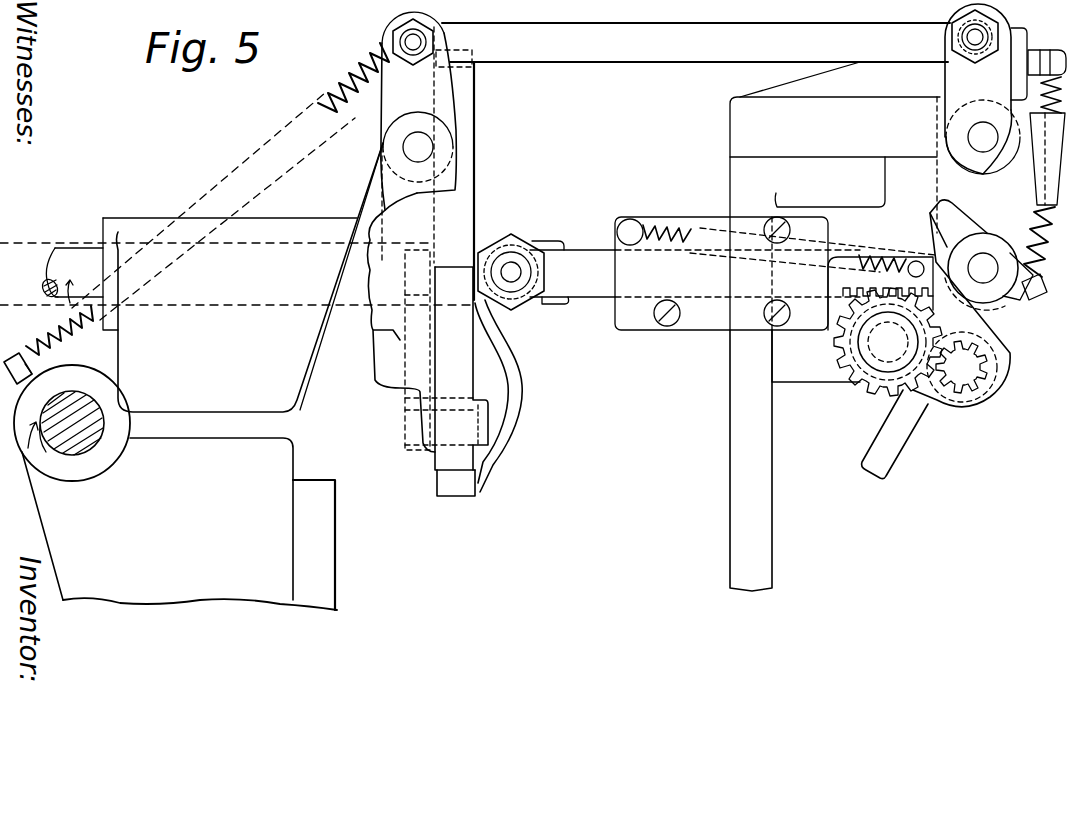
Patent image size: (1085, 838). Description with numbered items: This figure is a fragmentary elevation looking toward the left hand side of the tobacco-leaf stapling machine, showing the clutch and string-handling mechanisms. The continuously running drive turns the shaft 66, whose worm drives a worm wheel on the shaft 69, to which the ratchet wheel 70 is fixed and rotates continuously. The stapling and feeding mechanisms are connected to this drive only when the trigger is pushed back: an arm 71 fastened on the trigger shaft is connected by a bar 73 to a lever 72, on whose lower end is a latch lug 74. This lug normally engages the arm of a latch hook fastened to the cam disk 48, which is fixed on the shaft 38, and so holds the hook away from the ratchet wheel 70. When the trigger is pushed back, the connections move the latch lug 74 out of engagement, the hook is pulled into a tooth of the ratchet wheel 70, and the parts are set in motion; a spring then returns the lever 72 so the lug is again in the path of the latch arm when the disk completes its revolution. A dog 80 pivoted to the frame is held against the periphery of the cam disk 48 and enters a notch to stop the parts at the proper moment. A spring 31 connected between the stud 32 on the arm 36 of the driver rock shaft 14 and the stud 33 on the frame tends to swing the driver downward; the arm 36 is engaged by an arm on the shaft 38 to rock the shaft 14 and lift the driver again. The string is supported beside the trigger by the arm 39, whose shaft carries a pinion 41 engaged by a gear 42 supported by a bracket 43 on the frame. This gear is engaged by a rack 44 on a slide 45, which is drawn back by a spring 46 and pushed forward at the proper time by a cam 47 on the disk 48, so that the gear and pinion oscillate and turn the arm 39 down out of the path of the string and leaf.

The driver rock shaft 14 is at (990, 285).
The spring 31 is at (1044, 177).
The stud 32 is at (1047, 290).
The stud 33 is at (1070, 40).
The arm 36 is at (953, 212).
The shaft 38 is at (552, 240).
The string supporting arm 39 is at (910, 437).
The pinion 41 is at (983, 392).
The gear 42 is at (880, 392).
The bracket 43 is at (1013, 340).
The rack 44 is at (837, 290).
The slide 45 is at (602, 298).
The spring 46 is at (688, 245).
The cam 47 is at (523, 390).
The cam disk 48 is at (475, 92).
The shaft 66 is at (97, 447).
The shaft 69 is at (73, 248).
The ratchet wheel 70 is at (415, 223).
The arm 71 is at (975, 77).
The lever 72 is at (443, 97).
The bar 73 is at (678, 50).
The latch lug 74 is at (420, 355).
The dog 80 is at (463, 458).